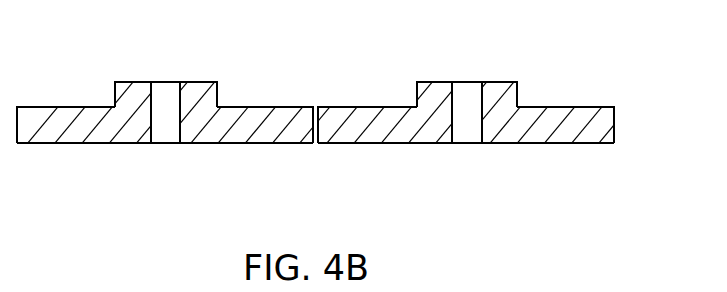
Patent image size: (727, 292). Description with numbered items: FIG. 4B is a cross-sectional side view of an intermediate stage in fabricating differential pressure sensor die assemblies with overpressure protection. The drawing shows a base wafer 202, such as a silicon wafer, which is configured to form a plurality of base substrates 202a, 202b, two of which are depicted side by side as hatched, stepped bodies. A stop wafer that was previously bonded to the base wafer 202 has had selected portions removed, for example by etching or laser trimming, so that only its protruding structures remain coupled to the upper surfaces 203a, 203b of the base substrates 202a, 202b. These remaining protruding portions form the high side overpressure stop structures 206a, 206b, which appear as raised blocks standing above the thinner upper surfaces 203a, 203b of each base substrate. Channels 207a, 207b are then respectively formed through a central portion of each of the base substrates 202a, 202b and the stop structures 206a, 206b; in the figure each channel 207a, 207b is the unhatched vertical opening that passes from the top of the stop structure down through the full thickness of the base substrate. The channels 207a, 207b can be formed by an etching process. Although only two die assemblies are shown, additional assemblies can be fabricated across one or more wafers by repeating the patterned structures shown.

The base wafer 202 is at (361, 114).
The base substrate 202a is at (184, 114).
The base substrate 202b is at (473, 114).
The upper surface 203a is at (60, 106).
The upper surface 203b is at (385, 106).
The high side overpressure stop structure 206a is at (218, 98).
The high side overpressure stop structure 206b is at (518, 100).
The channel 207a is at (167, 97).
The channel 207b is at (467, 97).